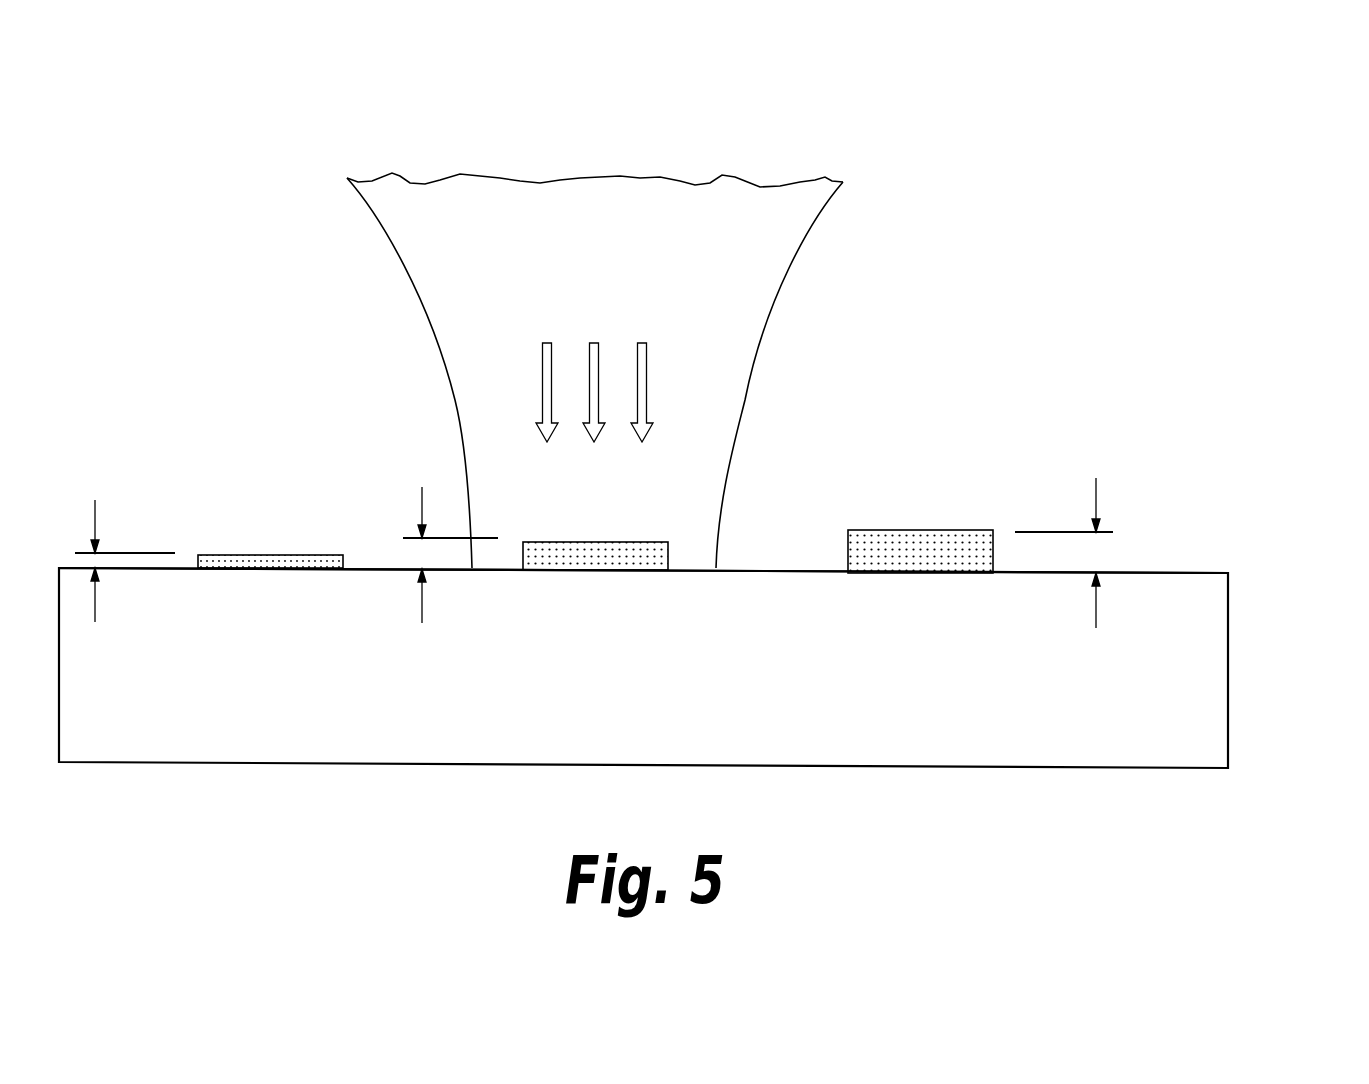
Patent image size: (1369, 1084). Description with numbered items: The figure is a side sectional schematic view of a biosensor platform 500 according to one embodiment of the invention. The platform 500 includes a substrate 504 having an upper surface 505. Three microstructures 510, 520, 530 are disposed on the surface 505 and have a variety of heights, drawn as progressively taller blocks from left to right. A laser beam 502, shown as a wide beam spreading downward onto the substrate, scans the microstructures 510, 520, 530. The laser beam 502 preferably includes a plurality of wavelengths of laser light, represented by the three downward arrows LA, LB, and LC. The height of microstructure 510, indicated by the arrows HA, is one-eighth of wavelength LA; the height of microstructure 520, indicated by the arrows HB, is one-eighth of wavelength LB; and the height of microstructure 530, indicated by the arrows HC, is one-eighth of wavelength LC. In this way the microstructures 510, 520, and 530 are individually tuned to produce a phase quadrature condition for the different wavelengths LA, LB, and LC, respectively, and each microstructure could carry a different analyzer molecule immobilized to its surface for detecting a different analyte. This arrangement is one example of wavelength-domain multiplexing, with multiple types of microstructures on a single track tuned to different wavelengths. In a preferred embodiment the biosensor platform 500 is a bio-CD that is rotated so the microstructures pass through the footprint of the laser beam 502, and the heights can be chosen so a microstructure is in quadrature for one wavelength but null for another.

The biosensor platform 500 is at (1050, 270).
The laser beam 502 is at (391, 184).
The substrate 504 is at (1228, 675).
The upper surface 505 is at (1202, 572).
The microstructure 510 is at (258, 550).
The microstructure 520 is at (550, 542).
The microstructure 530 is at (888, 530).
The wavelength of laser light LA is at (541, 368).
The wavelength of laser light LB is at (588, 362).
The wavelength of laser light LC is at (647, 377).
The height of microstructure HA is at (122, 561).
The height of microstructure HB is at (449, 557).
The height of microstructure HC is at (1066, 556).